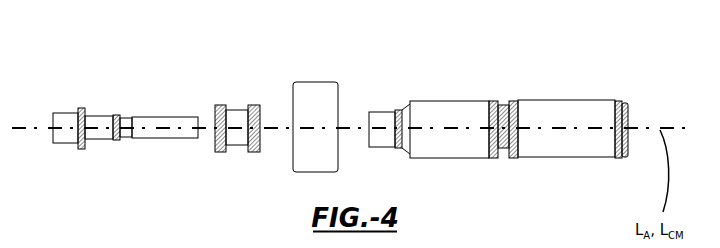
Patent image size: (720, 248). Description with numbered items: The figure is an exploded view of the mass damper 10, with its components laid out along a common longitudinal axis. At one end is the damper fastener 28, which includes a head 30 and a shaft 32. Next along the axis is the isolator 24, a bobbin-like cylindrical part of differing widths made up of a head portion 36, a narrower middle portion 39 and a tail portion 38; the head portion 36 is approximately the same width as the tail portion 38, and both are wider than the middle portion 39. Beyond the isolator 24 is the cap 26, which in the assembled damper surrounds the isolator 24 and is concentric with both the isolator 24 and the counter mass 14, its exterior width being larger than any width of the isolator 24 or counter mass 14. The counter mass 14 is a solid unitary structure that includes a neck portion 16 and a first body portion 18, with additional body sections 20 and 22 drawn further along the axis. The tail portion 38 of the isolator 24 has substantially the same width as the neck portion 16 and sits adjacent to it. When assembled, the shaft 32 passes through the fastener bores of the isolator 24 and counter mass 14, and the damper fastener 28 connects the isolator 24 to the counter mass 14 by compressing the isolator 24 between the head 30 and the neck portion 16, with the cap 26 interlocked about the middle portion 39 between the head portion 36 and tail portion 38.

The mass damper 10 is at (57, 57).
The counter mass 14 is at (580, 112).
The neck portion 16 is at (380, 120).
The first body portion 18 is at (458, 110).
The neck portion 20 is at (508, 122).
The second cylindrical body 22 is at (562, 112).
The isolator 24 is at (240, 104).
The cap 26 is at (314, 91).
The damper fastener 28 is at (104, 112).
The head 30 is at (63, 136).
The shaft 32 is at (137, 133).
The head portion 36 is at (219, 138).
The tail portion 38 is at (257, 140).
The middle portion 39 is at (240, 138).